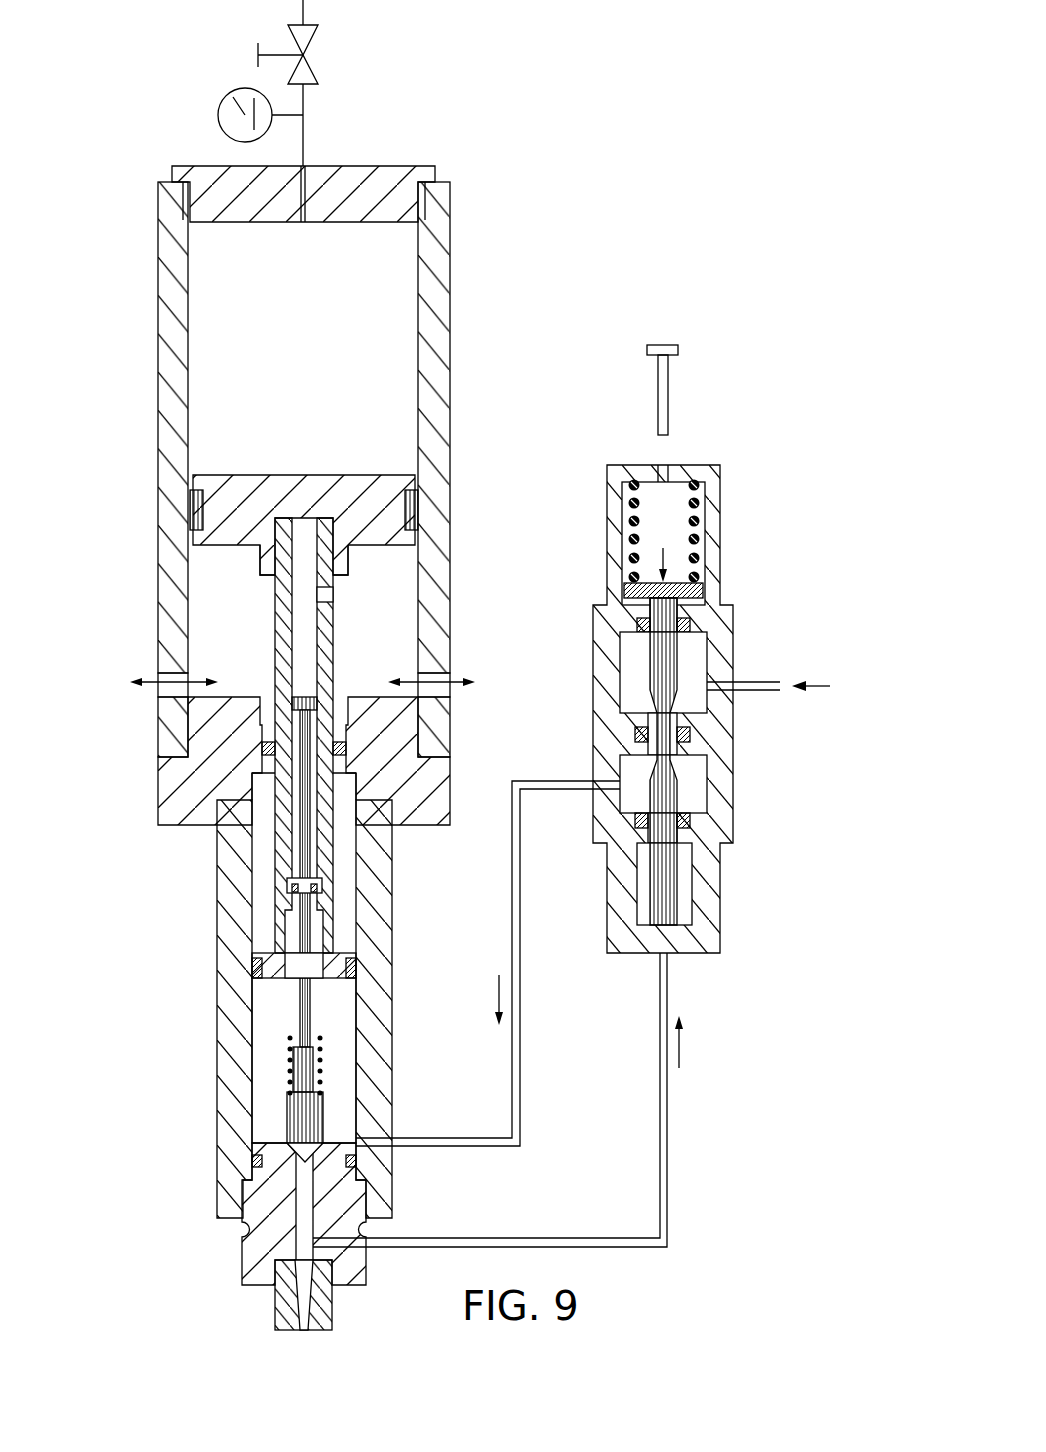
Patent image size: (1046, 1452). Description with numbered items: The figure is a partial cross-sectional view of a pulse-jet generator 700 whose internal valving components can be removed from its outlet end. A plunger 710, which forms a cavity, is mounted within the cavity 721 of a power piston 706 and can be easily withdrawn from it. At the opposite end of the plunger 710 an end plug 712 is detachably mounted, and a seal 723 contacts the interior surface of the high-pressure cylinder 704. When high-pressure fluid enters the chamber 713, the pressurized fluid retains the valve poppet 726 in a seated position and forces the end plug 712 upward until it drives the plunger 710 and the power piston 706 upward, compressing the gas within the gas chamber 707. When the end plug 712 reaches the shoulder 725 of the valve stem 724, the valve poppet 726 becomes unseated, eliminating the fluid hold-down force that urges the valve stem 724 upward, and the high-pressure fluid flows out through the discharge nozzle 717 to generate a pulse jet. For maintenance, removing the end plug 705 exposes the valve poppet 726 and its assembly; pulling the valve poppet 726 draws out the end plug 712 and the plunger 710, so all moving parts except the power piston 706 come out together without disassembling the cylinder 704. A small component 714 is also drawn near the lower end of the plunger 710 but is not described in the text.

The pulse-jet generator 700 is at (540, 100).
The high-pressure cylinder 704 is at (380, 1072).
The end plug 705 is at (258, 1253).
The power piston 706 is at (288, 481).
The gas chamber 707 is at (393, 270).
The plunger 710 is at (277, 600).
The end plug 712 is at (275, 977).
The chamber 713 is at (337, 1013).
The coupling nut 714 is at (290, 890).
The discharge nozzle 717 is at (285, 1320).
The cavity 721 is at (273, 578).
The seal 723 is at (252, 968).
The valve stem 724 is at (305, 848).
The shoulder 725 is at (293, 707).
The valve poppet 726 is at (302, 1125).